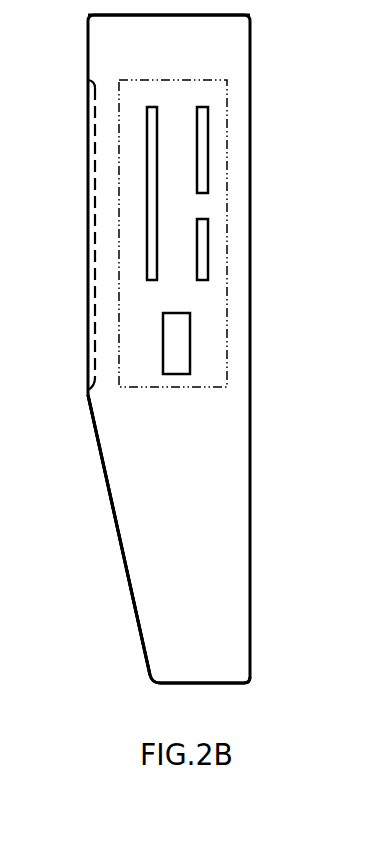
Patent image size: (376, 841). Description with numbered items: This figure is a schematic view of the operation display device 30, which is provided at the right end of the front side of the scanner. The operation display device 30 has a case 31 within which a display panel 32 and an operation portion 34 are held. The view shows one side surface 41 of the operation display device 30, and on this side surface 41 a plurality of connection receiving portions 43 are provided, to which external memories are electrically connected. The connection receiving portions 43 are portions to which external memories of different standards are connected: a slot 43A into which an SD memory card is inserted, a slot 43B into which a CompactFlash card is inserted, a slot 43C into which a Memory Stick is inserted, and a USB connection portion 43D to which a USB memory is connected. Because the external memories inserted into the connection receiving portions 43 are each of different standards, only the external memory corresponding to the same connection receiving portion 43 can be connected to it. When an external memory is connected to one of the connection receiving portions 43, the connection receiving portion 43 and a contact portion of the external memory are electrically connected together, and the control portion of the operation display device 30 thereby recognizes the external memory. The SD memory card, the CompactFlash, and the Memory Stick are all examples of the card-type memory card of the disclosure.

The operation display device 30 is at (112, 624).
The case 31 is at (88, 42).
The display panel 32 is at (88, 226).
The operation portion 34 is at (115, 522).
The side surface 41 is at (193, 543).
The connection receiving portions 43 is at (240, 224).
The slot 43A is at (208, 138).
The slot 43B is at (152, 106).
The slot 43C is at (208, 244).
The USB connection portion 43D is at (190, 345).